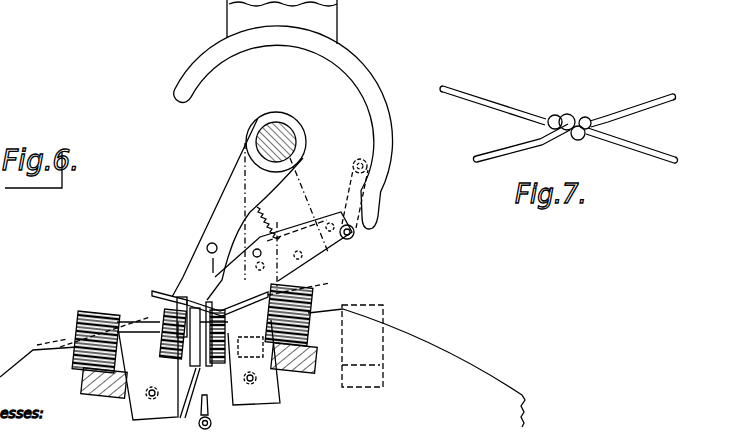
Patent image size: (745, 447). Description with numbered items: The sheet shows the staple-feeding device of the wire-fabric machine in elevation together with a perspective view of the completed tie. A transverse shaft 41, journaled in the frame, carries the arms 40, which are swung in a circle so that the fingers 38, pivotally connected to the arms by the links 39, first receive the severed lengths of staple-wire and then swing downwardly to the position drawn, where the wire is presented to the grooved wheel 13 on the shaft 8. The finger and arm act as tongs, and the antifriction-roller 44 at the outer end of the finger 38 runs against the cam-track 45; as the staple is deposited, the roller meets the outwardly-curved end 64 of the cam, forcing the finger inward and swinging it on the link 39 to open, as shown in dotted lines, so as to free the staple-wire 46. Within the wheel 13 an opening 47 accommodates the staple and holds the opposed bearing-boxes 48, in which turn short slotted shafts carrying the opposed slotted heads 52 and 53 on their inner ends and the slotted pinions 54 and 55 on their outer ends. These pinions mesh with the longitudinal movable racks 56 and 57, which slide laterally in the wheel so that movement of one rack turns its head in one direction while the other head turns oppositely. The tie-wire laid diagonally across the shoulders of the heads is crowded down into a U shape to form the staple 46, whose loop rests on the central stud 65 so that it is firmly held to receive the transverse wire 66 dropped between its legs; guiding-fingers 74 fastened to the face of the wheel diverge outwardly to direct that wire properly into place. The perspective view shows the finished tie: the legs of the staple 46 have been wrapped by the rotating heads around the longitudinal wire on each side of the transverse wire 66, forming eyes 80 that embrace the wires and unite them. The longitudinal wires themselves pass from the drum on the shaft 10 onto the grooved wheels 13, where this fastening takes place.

In FIG. 6, the cam-track 45 is at (378, 97).
In FIG. 6, the transverse shaft 41 is at (292, 137).
In FIG. 6, the arm 40 is at (250, 209).
In FIG. 6, the finger 38 is at (283, 252).
In FIG. 6, the antifriction-roller 44 is at (352, 242).
In FIG. 6, the outwardly-curved end 64 is at (367, 231).
In FIG. 6, the link 39 is at (205, 267).
In FIG. 6, the grooved wheel 13 is at (262, 366).
In FIG. 6, the bearing-box 48 is at (148, 413).
In FIG. 6, the slotted pinion 54 is at (96, 332).
In FIG. 6, the longitudinal movable rack 57 is at (103, 397).
In FIG. 6, the slotted head 53 is at (168, 333).
In FIG. 6, the slotted pinion 55 is at (310, 296).
In FIG. 6, the longitudinal movable rack 56 is at (298, 371).
In FIG. 6, the staple 46 is at (176, 296).
In FIG. 7, the staple 46 is at (570, 113).
In FIG. 6, the slotted head 52 is at (212, 358).
In FIG. 6, the opening 47 is at (209, 368).
In FIG. 6, the central stud 65 is at (187, 405).
In FIG. 6, the guiding-finger 74 is at (212, 412).
In FIG. 7, the shaft 8 is at (552, 118).
In FIG. 7, the eye 80 is at (582, 143).
In FIG. 7, the transverse wire 66 is at (635, 112).
In FIG. 7, the shaft 10 is at (660, 158).